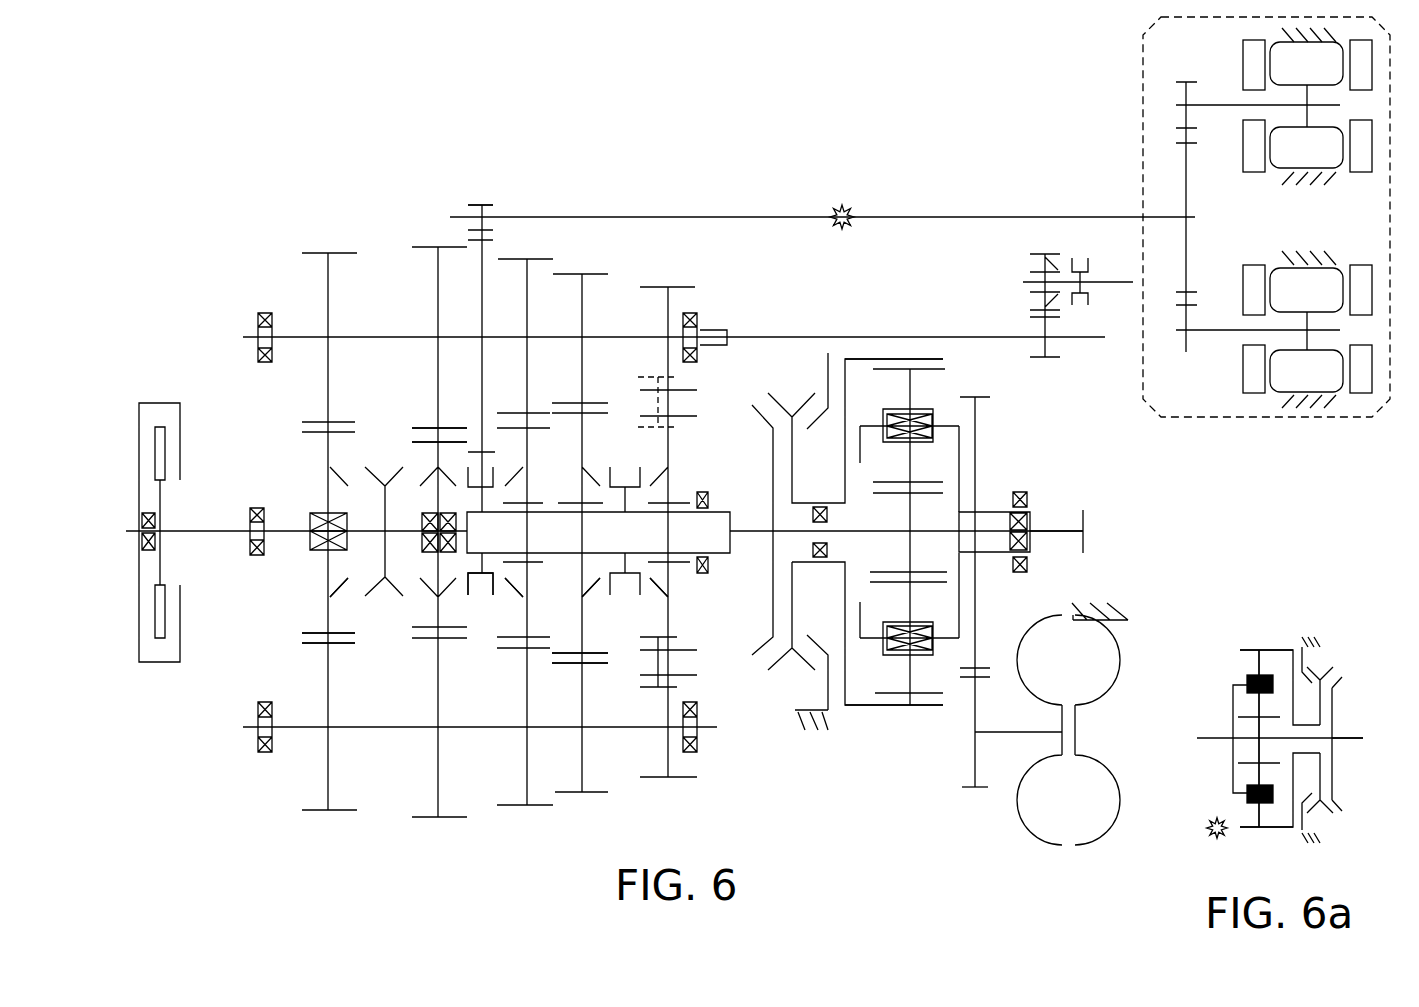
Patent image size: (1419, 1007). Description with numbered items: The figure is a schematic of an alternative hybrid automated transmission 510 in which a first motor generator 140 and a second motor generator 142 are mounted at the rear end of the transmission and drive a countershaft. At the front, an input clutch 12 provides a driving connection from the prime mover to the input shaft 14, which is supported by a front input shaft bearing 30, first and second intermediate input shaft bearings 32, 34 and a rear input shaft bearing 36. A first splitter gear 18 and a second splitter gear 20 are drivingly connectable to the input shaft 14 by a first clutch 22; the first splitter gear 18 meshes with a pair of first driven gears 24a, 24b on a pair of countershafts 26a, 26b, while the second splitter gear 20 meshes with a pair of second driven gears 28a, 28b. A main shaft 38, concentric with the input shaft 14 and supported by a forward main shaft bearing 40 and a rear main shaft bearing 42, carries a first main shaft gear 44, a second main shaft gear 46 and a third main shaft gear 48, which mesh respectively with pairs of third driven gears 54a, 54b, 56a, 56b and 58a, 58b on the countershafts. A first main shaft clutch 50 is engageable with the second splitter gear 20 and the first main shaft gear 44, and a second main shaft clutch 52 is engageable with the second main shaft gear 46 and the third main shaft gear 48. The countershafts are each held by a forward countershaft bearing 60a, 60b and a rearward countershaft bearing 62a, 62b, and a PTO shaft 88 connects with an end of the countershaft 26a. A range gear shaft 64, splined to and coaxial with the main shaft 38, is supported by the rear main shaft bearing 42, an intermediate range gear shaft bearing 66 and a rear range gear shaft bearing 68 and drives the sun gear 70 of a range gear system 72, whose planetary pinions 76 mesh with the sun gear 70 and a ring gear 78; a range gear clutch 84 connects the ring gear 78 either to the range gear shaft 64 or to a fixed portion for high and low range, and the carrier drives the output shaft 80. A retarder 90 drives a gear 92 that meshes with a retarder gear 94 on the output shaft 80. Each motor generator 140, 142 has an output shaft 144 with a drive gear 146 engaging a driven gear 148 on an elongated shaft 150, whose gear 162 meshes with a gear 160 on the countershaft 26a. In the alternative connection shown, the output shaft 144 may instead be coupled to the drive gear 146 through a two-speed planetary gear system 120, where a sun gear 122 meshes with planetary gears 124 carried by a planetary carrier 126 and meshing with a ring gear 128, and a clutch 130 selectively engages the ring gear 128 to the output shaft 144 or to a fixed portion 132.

In FIG. 6, the input clutch 12 is at (153, 676).
In FIG. 6, the input shaft 14 is at (232, 530).
In FIG. 6, the first splitter gear 18 is at (328, 612).
In FIG. 6, the second splitter gear 20 is at (438, 607).
In FIG. 6, the first clutch 22 is at (388, 426).
In FIG. 6, the first driven gear 24a is at (327, 303).
In FIG. 6, the first driven gear 24b is at (327, 765).
In FIG. 6, the countershaft 26a is at (356, 337).
In FIG. 6, the countershaft 26b is at (460, 728).
In FIG. 6, the second driven gear 28a is at (437, 263).
In FIG. 6, the second driven gear 28b is at (438, 765).
In FIG. 6, the front input shaft bearing 30 is at (157, 544).
In FIG. 6, the first intermediate input shaft bearing 32 is at (259, 556).
In FIG. 6, the second intermediate input shaft bearing 34 is at (328, 513).
In FIG. 6, the rear input shaft bearing 36 is at (440, 513).
In FIG. 6, the main shaft 38 is at (548, 512).
In FIG. 6, the forward main shaft bearing 40 is at (458, 548).
In FIG. 6, the rear main shaft bearing 42 is at (708, 495).
In FIG. 6, the first main shaft gear 44 is at (527, 612).
In FIG. 6, the second main shaft gear 46 is at (582, 630).
In FIG. 6, the third main shaft gear 48 is at (668, 615).
In FIG. 6, the first main shaft clutch 50 is at (484, 626).
In FIG. 6, the second main shaft clutch 52 is at (625, 446).
In FIG. 6, the third driven gear 54a is at (540, 270).
In FIG. 6, the third driven gear 54b is at (527, 797).
In FIG. 6, the third driven gear 56a is at (582, 300).
In FIG. 6, the third driven gear 56b is at (582, 760).
In FIG. 6, the third driven gear 58a is at (668, 300).
In FIG. 6, the third driven gear 58b is at (668, 765).
In FIG. 6, the forward countershaft bearing 60a is at (262, 317).
In FIG. 6, the forward countershaft bearing 60b is at (262, 743).
In FIG. 6, the rearward countershaft bearing 62a is at (697, 356).
In FIG. 6, the rearward countershaft bearing 62b is at (697, 712).
In FIG. 6, the range gear shaft 64 is at (900, 531).
In FIG. 6, the intermediate range gear shaft bearing 66 is at (827, 550).
In FIG. 6, the rear range gear shaft bearing 68 is at (1020, 520).
In FIG. 6, the sun gear 70 is at (920, 495).
In FIG. 6, the range gear system 72 is at (893, 737).
In FIG. 6, the planetary pinions 76 is at (922, 372).
In FIG. 6, the ring gear 78 is at (922, 360).
In FIG. 6, the output shaft 80 is at (1055, 533).
In FIG. 6, the range gear clutch 84 is at (788, 688).
In FIG. 6, the PTO shaft 88 is at (955, 337).
In FIG. 6, the retarder 90 is at (1058, 847).
In FIG. 6, the gear 92 is at (970, 787).
In FIG. 6, the retarder gear 94 is at (978, 400).
In FIG. 6a, the 2-speed planetary gear system 120 is at (1280, 634).
In FIG. 6a, the sun gear 122 is at (1250, 745).
In FIG. 6a, the planetary gears 124 is at (1260, 672).
In FIG. 6a, the planetary carrier 126 is at (1233, 708).
In FIG. 6a, the ring gear 128 is at (1270, 648).
In FIG. 6a, the clutch 130 is at (1328, 660).
In FIG. 6a, the fixed portion 132 is at (1300, 832).
In FIG. 6, the first motor generator 140 is at (1305, 418).
In FIG. 6, the second motor generator 142 is at (1300, 178).
In FIG. 6, the output shaft 144 is at (1225, 105).
In FIG. 6a, the output shaft 144 is at (1340, 740).
In FIG. 6, the drive gear 146 is at (1185, 92).
In FIG. 6, the driven gear 148 is at (1188, 185).
In FIG. 6, the elongated shaft 150 is at (700, 217).
In FIG. 6a, the elongated shaft 150 is at (1218, 737).
In FIG. 6, the gear 160 is at (482, 240).
In FIG. 6, the gear 162 is at (482, 210).
In FIG. 6, the hybrid automated transmission 510 is at (898, 193).